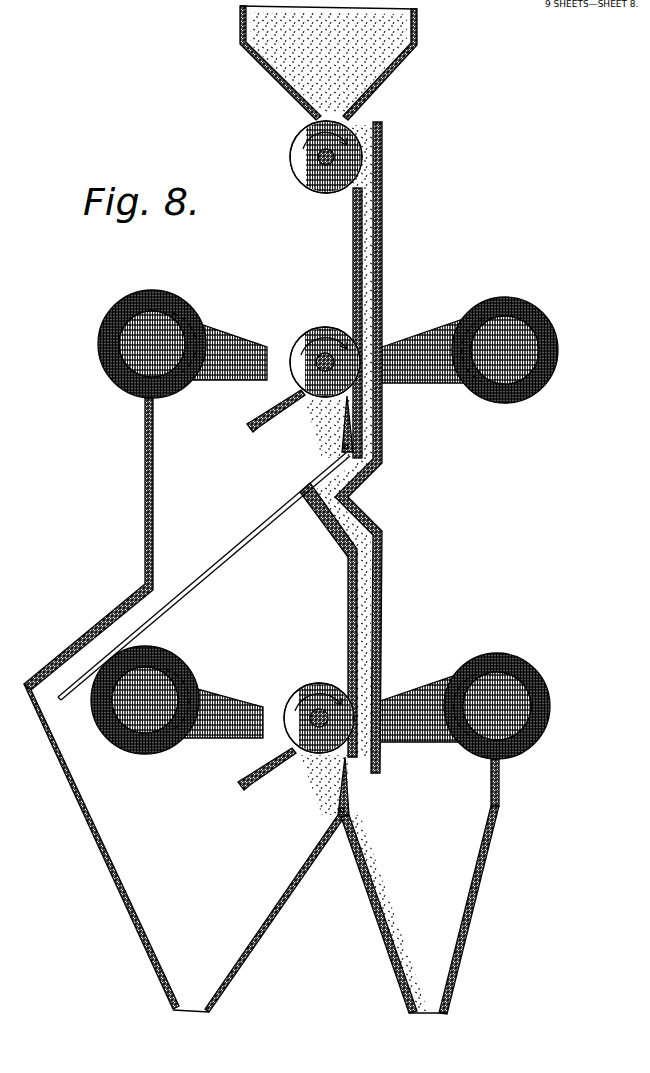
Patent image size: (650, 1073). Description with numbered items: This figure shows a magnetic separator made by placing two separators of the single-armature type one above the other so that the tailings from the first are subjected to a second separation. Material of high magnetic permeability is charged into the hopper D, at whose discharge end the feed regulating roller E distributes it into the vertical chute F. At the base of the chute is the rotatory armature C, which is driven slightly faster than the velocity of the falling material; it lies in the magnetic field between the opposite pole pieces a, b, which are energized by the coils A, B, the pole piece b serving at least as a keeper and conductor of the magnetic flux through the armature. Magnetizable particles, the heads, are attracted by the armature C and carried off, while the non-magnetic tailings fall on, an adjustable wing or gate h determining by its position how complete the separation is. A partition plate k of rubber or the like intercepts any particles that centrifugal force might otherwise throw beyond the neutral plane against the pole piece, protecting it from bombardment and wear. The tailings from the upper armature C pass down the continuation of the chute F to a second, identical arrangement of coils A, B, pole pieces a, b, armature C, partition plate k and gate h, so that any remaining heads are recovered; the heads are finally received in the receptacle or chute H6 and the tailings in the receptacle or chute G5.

The hopper D is at (240, 29).
The feed regulating roller E is at (289, 144).
The vertical chute F is at (388, 217).
The coil A is at (99, 325).
The coil B is at (511, 551).
The rotatory armature C is at (325, 327).
The pole piece a is at (208, 524).
The pole piece b is at (426, 528).
The partition plate k is at (286, 396).
The adjustable wing or gate h is at (343, 424).
The receptacle or chute H6 is at (215, 899).
The receptacle or chute G5 is at (420, 910).